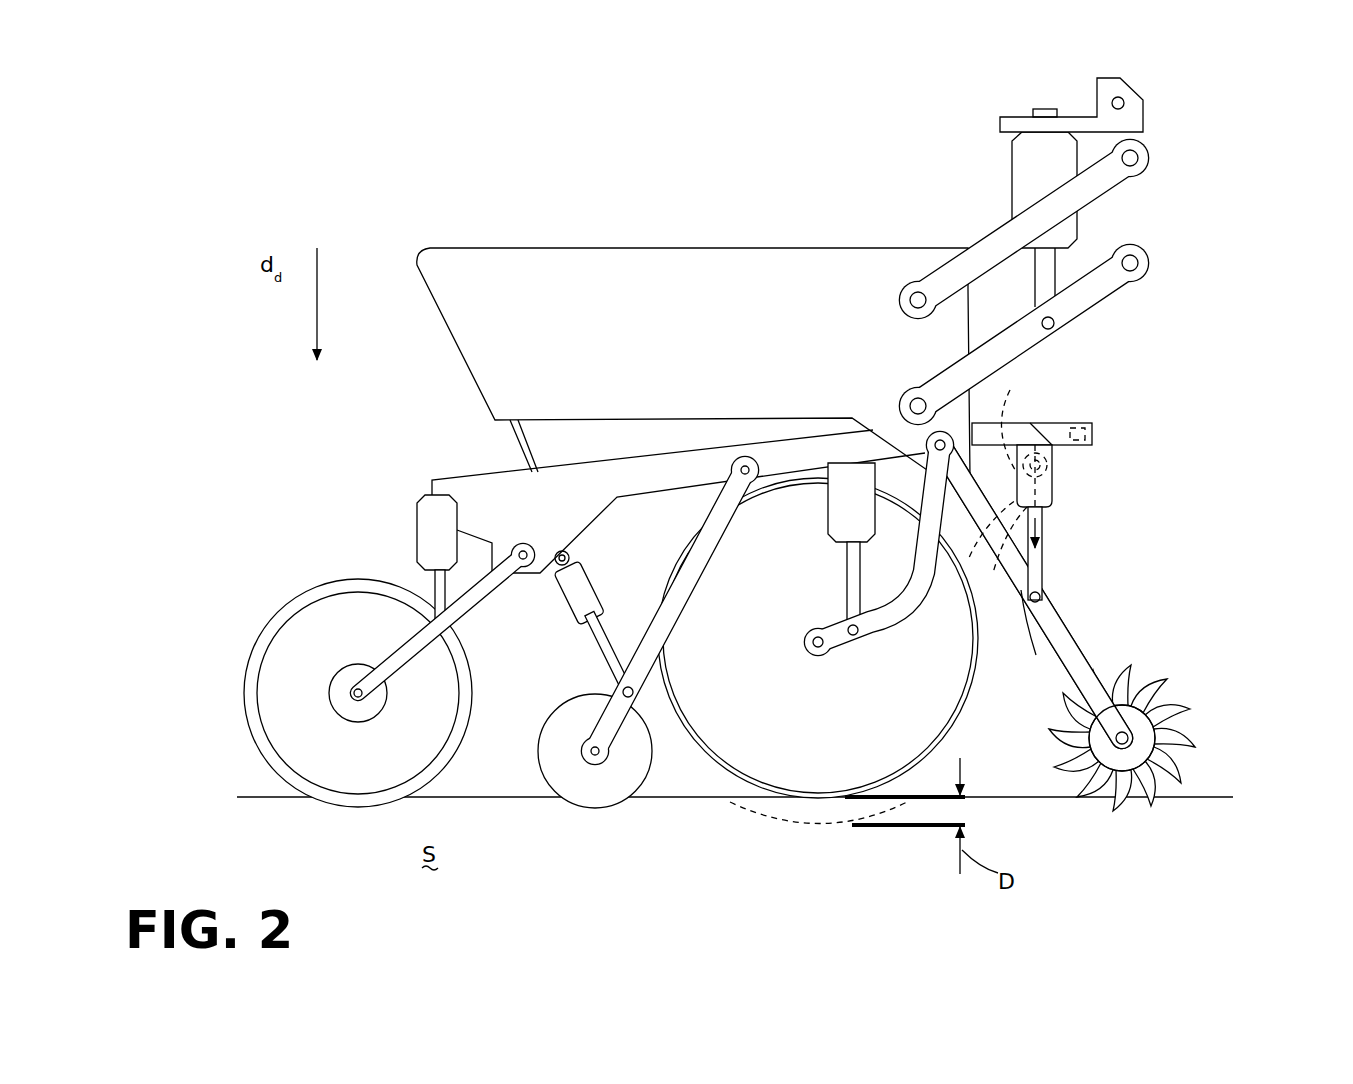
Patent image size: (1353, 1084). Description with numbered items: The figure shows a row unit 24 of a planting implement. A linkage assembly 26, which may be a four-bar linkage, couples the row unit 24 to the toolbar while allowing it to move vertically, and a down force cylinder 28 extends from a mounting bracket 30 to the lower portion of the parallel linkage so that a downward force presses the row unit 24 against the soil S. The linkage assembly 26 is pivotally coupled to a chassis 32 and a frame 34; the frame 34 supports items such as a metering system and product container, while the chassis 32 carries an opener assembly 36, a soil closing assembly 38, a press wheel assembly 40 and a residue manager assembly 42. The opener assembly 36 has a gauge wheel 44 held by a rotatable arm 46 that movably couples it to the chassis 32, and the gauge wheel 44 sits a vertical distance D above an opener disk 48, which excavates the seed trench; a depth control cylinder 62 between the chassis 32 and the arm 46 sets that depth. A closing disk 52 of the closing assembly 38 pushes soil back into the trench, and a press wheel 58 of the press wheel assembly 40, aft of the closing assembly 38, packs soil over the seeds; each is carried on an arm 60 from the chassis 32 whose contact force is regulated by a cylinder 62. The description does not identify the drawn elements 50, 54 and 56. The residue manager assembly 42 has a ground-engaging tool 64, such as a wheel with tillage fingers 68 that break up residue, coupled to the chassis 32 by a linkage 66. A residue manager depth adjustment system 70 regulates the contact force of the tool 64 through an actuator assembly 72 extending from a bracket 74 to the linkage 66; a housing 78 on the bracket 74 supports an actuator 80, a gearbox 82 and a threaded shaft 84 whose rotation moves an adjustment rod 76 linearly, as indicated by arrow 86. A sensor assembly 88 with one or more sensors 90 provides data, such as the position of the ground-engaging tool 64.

The row unit 24 is at (545, 123).
The linkage assembly 26 is at (1112, 192).
The down force cylinder 28 is at (1012, 178).
The mounting bracket 30 is at (1097, 95).
The chassis 32 is at (470, 478).
The frame 34 is at (708, 245).
The opener assembly 36 is at (987, 714).
The soil closing assembly 38 is at (551, 698).
The press wheel assembly 40 is at (282, 543).
The residue manager assembly 42 is at (1082, 607).
The gauge wheel 44 is at (977, 607).
The rotatable arm 46 is at (873, 633).
The opener disk 48 is at (757, 812).
The gauge wheel actuator 50 is at (837, 538).
The closing disk 52 is at (545, 720).
The press wheel arm 54 is at (710, 505).
The press wheel actuator 56 is at (587, 583).
The press wheel 58 is at (245, 685).
The arm 60 is at (477, 600).
The depth control cylinder 62 is at (415, 520).
The ground-engaging tool 64 is at (1154, 738).
The linkage 66 is at (1077, 640).
The tillage points or fingers 68 is at (1165, 712).
The residue manager depth adjustment system 70 is at (1112, 514).
The actuator assembly 72 is at (1057, 511).
The bracket 74 is at (1017, 420).
The adjustment rod 76 is at (1045, 555).
The housing 78 is at (1052, 455).
The actuator 80 is at (1022, 418).
The gearbox 82 is at (1052, 470).
The threaded shaft 84 is at (1004, 556).
The arrow 86 is at (1037, 634).
The sensor assembly 88 is at (1122, 404).
The sensors 90 is at (1088, 434).